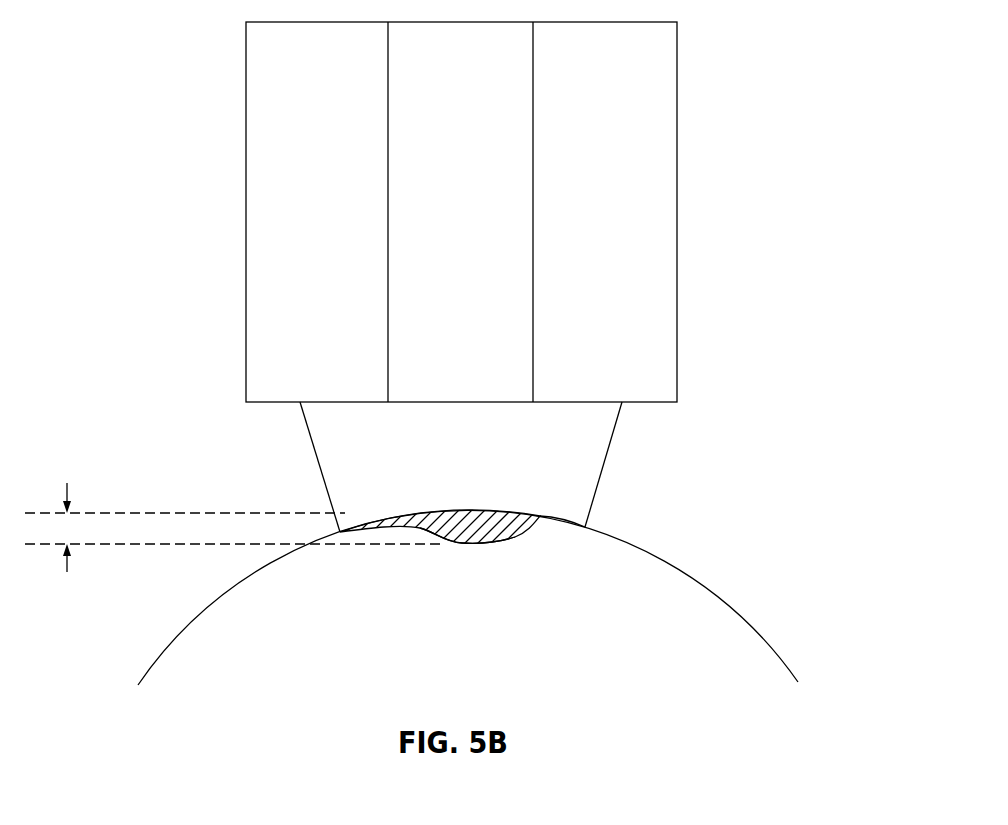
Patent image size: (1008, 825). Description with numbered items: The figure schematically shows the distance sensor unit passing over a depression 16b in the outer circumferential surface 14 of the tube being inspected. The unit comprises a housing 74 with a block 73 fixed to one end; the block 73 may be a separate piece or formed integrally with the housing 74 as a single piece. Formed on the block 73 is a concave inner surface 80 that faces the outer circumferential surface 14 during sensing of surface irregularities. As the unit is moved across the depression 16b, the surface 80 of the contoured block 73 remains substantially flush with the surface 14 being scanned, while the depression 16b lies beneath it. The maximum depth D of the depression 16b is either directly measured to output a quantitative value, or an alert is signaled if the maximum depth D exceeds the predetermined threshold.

The housing 74 is at (688, 201).
The block 73 is at (622, 462).
The concave inner surface 80 is at (532, 514).
The depression 16b is at (497, 556).
The outer circumferential surface 14 is at (718, 597).
The maximum depth D is at (69, 561).